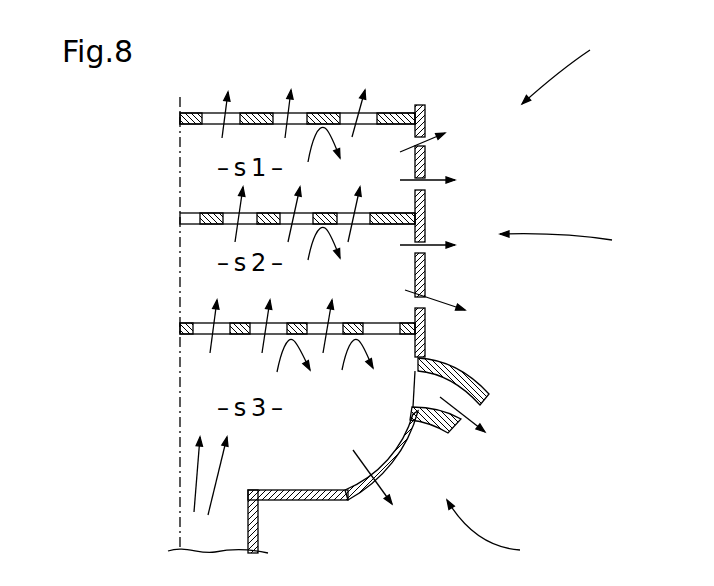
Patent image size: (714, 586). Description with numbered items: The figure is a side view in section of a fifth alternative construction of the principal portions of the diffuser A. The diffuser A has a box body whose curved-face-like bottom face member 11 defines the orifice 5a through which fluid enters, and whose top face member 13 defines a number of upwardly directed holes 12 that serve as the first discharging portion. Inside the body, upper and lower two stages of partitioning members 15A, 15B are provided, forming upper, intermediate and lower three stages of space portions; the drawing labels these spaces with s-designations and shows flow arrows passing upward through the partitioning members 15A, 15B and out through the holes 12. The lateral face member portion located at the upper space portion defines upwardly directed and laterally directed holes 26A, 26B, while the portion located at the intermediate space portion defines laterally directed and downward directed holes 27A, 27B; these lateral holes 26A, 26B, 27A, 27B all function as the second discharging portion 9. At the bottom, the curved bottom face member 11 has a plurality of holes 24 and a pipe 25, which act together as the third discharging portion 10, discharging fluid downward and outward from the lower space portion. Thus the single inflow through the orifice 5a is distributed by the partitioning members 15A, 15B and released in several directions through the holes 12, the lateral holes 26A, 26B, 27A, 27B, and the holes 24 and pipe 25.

The upwardly directed holes 12 is at (212, 113).
The top face member 13 is at (267, 113).
The upper partitioning member 15A is at (212, 213).
The lower partitioning member 15B is at (237, 336).
The orifice 5a is at (250, 494).
The bottom face member 11 is at (294, 501).
The holes 24 is at (360, 487).
The pipe 25 is at (457, 424).
The upwardly directed holes 26A is at (427, 143).
The laterally directed holes 26B is at (427, 195).
The laterally directed holes 27A is at (427, 258).
The downward directed holes 27B is at (427, 308).
The second discharging portion 9 is at (567, 246).
The third discharging portion 10 is at (501, 531).
The diffuser A is at (565, 64).